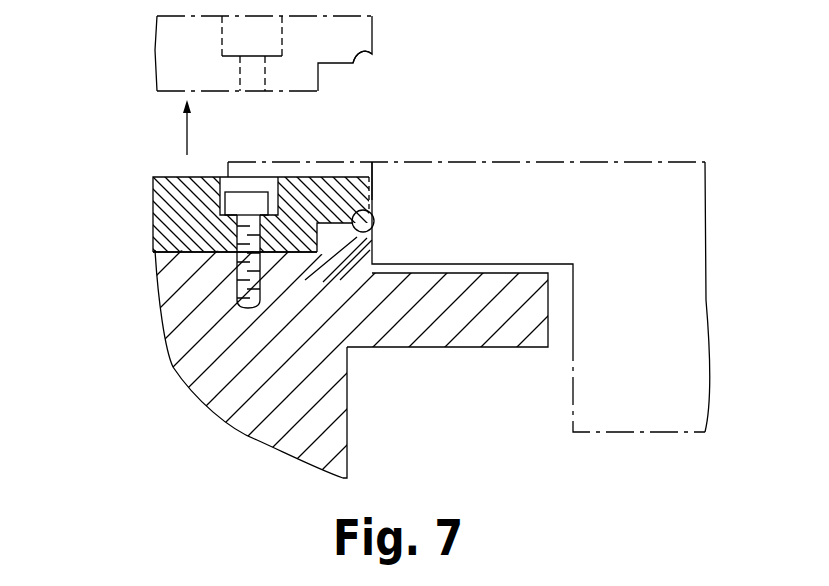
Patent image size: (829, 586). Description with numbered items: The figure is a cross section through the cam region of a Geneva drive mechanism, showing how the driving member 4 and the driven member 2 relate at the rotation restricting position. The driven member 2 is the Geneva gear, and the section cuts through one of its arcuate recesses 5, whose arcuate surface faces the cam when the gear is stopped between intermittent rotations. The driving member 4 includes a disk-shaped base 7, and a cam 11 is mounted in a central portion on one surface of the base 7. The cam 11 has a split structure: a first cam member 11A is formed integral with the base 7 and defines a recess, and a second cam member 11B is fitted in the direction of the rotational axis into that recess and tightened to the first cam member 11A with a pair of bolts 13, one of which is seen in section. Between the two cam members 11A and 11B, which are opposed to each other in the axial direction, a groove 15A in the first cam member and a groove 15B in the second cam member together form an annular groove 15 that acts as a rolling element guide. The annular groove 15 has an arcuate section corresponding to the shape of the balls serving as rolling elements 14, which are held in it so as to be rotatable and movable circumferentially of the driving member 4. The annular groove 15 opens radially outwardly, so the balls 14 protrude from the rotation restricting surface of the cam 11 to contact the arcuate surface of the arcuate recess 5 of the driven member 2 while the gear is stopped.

The driven member 2 is at (668, 150).
The driving member 4 is at (168, 380).
The arcuate recess 5 is at (367, 170).
The base 7 is at (418, 332).
The cam 11 is at (281, 143).
The first cam member 11A is at (363, 252).
The second cam member 11B is at (153, 219).
The bolt 13 is at (242, 200).
The rolling element 14 is at (375, 220).
The annular groove 15 is at (405, 187).
The groove 15A is at (338, 280).
The groove 15B is at (375, 215).